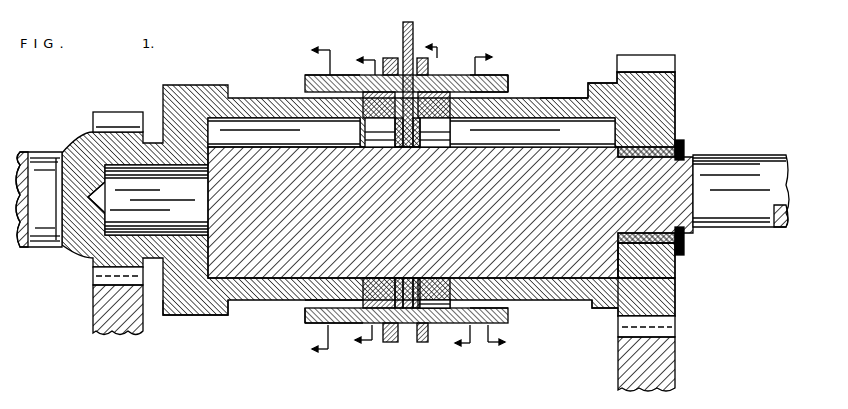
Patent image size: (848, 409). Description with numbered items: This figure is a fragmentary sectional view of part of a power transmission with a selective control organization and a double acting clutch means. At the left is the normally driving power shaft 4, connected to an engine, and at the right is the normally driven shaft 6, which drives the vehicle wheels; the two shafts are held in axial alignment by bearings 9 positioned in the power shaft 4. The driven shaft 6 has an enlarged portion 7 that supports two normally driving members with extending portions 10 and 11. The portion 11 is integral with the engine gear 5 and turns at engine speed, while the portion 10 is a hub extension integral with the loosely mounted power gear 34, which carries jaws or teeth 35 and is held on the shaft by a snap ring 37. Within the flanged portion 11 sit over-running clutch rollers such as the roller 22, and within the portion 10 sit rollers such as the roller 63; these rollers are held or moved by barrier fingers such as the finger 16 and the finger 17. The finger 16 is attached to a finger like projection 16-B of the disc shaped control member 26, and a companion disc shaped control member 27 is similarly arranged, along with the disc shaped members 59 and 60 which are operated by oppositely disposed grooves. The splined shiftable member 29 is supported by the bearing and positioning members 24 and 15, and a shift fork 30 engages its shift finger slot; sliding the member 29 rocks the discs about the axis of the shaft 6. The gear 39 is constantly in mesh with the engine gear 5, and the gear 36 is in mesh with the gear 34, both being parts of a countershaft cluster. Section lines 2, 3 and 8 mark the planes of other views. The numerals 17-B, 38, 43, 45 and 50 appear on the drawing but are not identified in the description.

The section line 2- 2 is at (314, 200).
The section line 3- 3 is at (360, 200).
The power shaft 4 is at (68, 238).
The engine gear 5 is at (120, 121).
The driven shaft 6 is at (745, 178).
The enlarged portion 7 is at (693, 266).
The section line 8- 8 is at (447, 193).
The bearings 9 is at (100, 245).
The extending portion 10 is at (573, 101).
The extending portion 11 is at (248, 101).
The bearing and positioning member 15 is at (467, 303).
The barrier finger 16 is at (313, 88).
The finger like projection 16-B is at (322, 77).
The barrier finger 17 is at (508, 84).
The cover plate end portion 17-B is at (503, 77).
The over-running clutch roller element 22 is at (272, 130).
The bearing and positioning member 24 is at (300, 301).
The disc shaped control member 26 is at (305, 316).
The disc shaped control member 27 is at (318, 324).
The splined shiftable member 29 is at (508, 91).
The shift fork 30 is at (414, 23).
The loosely mounted power gear 34 is at (657, 92).
The jaws or teeth 35 is at (667, 63).
The countershaft gear 36 is at (677, 343).
The snap ring 37 is at (683, 148).
The bearing 38 is at (660, 280).
The gear 39 is at (122, 333).
The housing shoulder 43 is at (582, 300).
The housing base 45 is at (188, 317).
The packing seal 50 is at (660, 150).
The disc shaped member 59 is at (513, 318).
The disc shaped member 60 is at (513, 315).
The over-running clutch roller element 63 is at (557, 133).